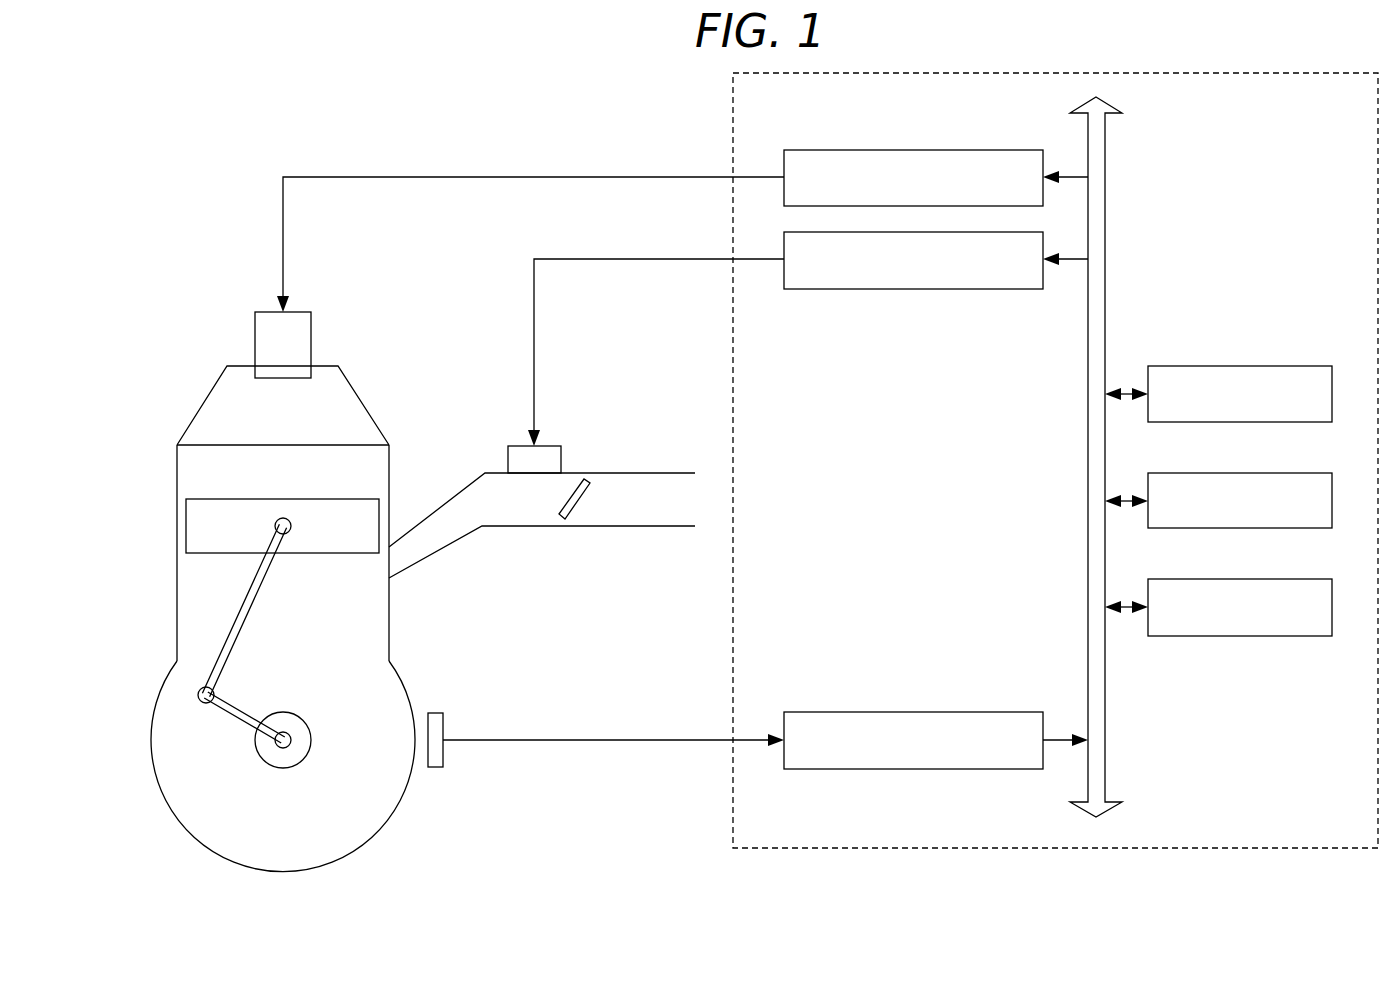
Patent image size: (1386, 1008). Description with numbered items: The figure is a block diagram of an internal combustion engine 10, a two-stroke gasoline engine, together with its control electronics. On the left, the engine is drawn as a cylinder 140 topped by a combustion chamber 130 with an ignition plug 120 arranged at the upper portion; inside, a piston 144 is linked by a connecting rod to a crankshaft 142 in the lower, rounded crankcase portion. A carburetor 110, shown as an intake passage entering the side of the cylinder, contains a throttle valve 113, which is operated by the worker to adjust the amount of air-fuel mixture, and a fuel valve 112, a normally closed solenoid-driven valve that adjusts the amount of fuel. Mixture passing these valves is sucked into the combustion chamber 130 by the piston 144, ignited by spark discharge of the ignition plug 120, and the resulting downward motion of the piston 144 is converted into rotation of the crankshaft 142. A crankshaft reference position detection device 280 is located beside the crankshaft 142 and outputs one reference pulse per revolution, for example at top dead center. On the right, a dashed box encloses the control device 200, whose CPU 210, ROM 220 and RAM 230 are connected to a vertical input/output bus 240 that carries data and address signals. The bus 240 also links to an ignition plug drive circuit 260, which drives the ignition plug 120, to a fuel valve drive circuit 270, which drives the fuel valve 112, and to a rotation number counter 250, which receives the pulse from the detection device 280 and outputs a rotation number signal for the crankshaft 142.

The internal combustion engine 10 is at (201, 180).
The carburetor 110 is at (660, 472).
The fuel valve 112 is at (550, 443).
The throttle valve 113 is at (578, 510).
The ignition plug 120 is at (311, 323).
The combustion chamber 130 is at (223, 475).
The cylinder 140 is at (390, 643).
The crankshaft 142 is at (292, 722).
The piston 144 is at (326, 512).
The control device 200 is at (810, 851).
The central processing unit (CPU) 210 is at (1255, 366).
The read-only memory (ROM) 220 is at (1255, 473).
The random access memory (RAM) 230 is at (1255, 579).
The input/output bus 240 is at (1105, 297).
The rotation number counter 250 is at (962, 712).
The ignition plug drive circuit 260 is at (963, 150).
The fuel valve drive circuit 270 is at (962, 289).
The crankshaft reference position detection device 280 is at (443, 725).